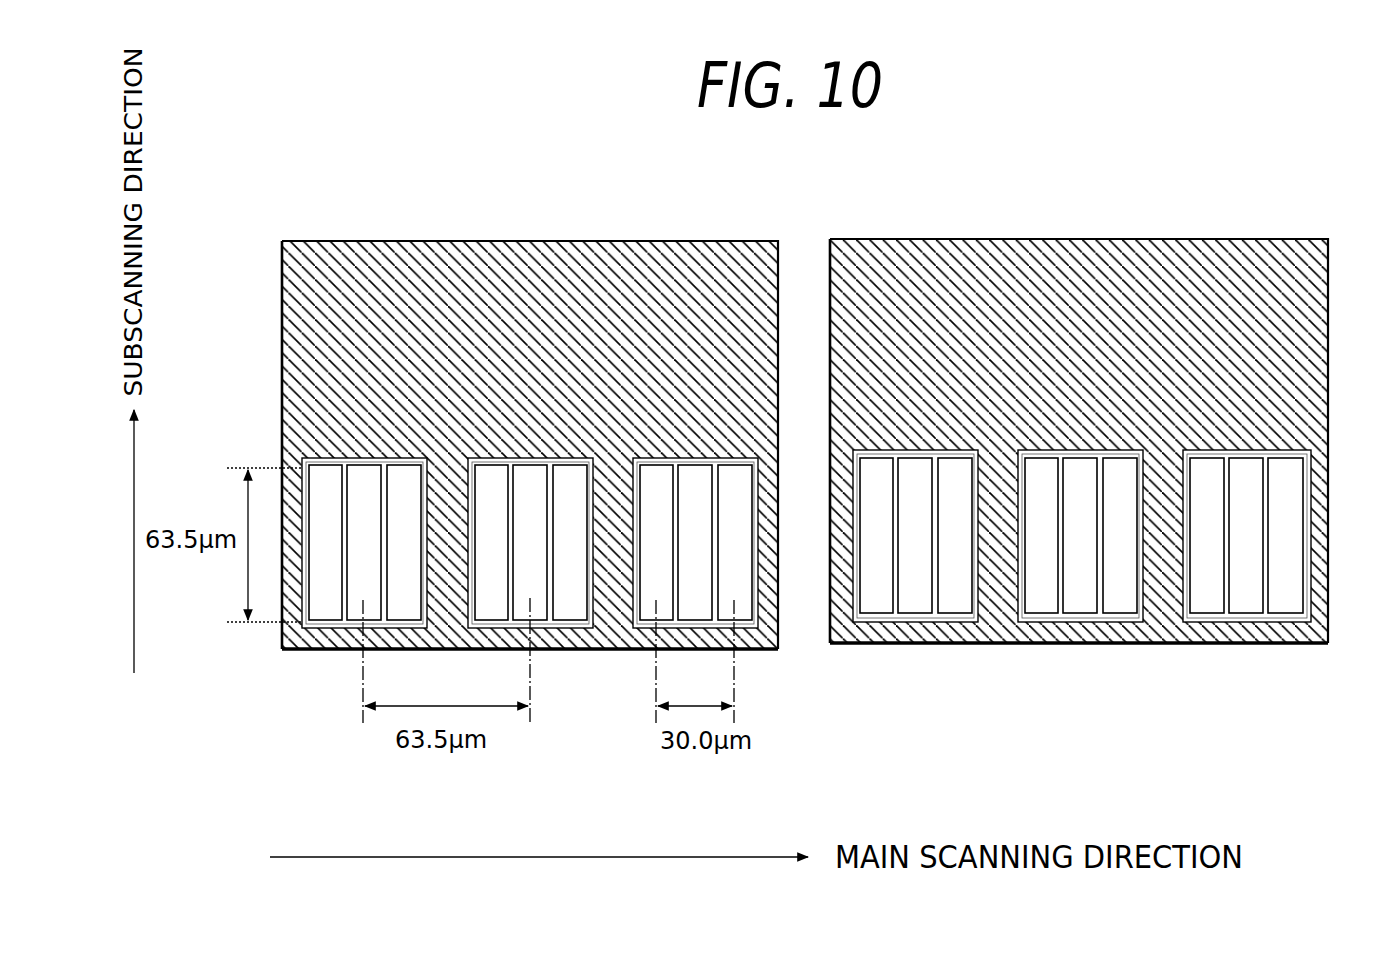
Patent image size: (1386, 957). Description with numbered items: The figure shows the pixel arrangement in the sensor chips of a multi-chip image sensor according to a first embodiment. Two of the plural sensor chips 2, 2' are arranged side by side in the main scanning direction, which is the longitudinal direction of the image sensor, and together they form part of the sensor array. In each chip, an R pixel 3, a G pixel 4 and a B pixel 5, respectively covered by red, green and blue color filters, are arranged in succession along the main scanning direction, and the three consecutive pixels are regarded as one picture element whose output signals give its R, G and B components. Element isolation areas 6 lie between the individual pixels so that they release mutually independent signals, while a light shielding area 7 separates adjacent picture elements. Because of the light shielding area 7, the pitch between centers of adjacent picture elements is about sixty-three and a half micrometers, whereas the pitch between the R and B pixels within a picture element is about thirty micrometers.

The sensor chip 2 is at (530, 398).
The sensor chip 2' is at (1079, 449).
The R pixel 3 is at (1207, 610).
The G pixel 4 is at (1250, 610).
The B pixel 5 is at (1293, 610).
The element isolation area 6 is at (1060, 625).
The light shielding area 7 is at (995, 628).